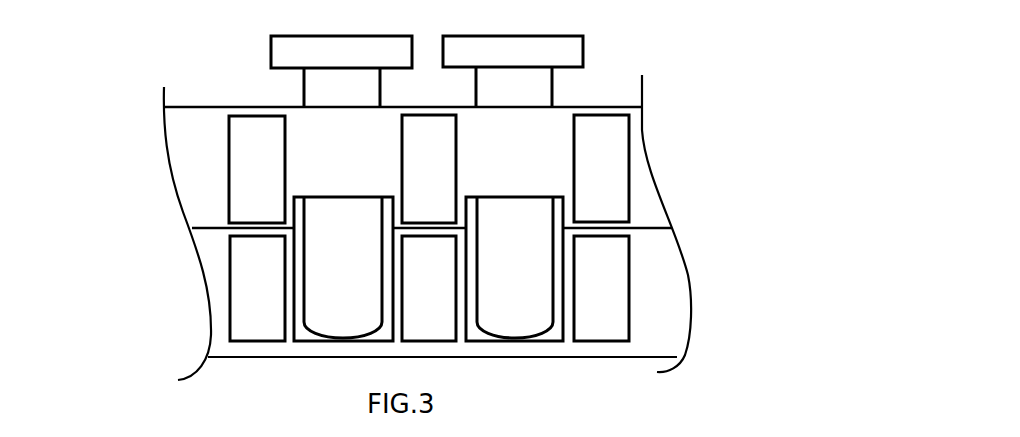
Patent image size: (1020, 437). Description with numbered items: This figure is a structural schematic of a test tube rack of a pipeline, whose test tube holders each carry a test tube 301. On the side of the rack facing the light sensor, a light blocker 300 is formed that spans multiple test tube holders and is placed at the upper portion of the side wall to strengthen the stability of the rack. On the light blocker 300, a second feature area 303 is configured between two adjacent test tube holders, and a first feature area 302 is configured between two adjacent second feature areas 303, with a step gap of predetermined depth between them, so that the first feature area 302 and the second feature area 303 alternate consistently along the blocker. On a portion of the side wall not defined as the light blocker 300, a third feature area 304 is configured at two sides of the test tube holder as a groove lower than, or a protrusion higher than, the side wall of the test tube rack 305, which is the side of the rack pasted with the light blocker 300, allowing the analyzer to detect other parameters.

The light blocker 300 is at (205, 120).
The test tube 301 is at (550, 44).
The first feature area 302 is at (540, 129).
The second feature area 303 is at (242, 176).
The third feature area 304 is at (250, 281).
The side wall of the test tube rack 305 is at (222, 240).